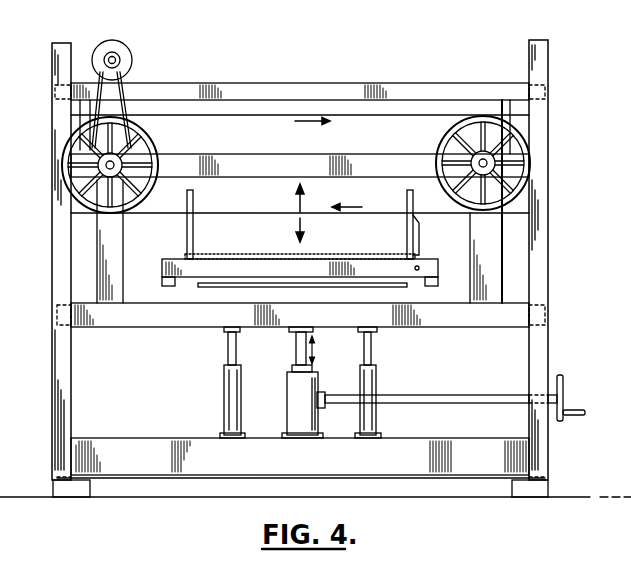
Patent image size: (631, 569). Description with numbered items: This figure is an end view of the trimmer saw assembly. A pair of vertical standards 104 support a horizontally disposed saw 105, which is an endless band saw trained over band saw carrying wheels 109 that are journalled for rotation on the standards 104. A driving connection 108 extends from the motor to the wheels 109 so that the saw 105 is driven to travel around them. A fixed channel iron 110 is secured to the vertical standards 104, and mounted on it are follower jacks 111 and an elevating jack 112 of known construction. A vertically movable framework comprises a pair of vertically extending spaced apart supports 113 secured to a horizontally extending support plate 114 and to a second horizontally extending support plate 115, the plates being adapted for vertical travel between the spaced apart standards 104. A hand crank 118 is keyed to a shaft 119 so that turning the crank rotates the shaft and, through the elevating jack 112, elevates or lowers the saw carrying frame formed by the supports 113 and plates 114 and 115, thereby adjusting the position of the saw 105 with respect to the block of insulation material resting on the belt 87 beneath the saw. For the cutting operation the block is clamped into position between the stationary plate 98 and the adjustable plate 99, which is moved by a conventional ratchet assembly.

The belt 87 is at (337, 258).
The stationary plate 98 is at (189, 208).
The adjustable plate 99 is at (405, 206).
The vertical standards 104 is at (68, 132).
The saw 105 is at (278, 212).
The driving connection 108 is at (118, 49).
The band saw carrying wheels 109 is at (152, 145).
The fixed channel iron 110 is at (313, 465).
The follower jacks 111 is at (224, 383).
The elevating jack 112 is at (287, 382).
The vertically extending spaced apart supports 113 is at (113, 250).
The horizontally extending support plate 114 is at (294, 158).
The horizontally extending support plate 115 is at (486, 317).
The hand crank 118 is at (561, 386).
The shaft 119 is at (486, 396).